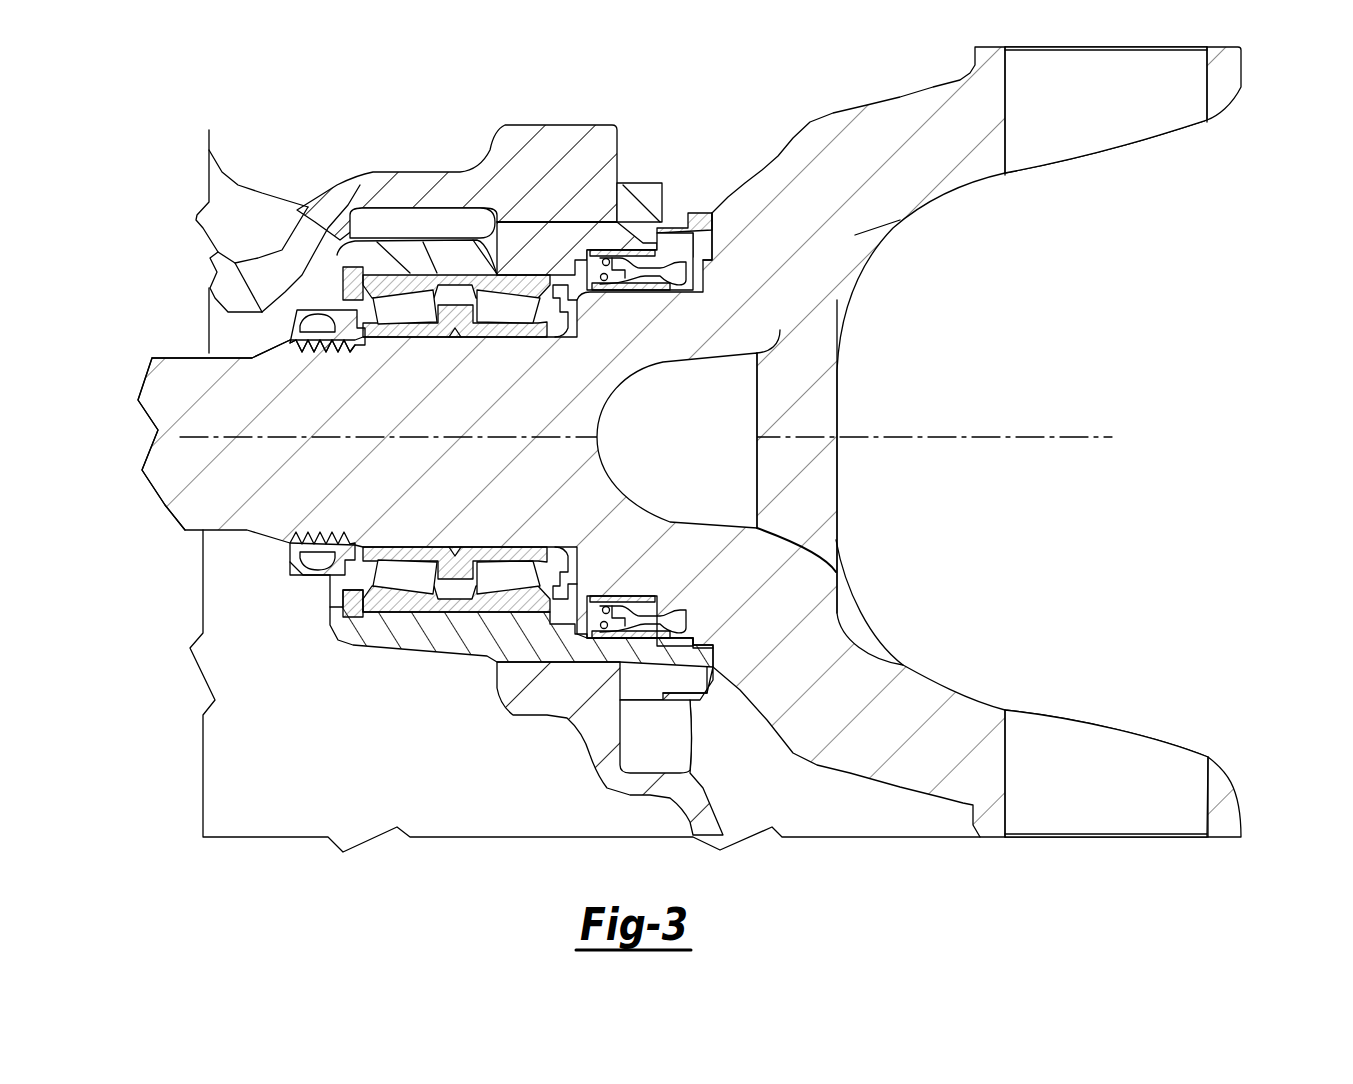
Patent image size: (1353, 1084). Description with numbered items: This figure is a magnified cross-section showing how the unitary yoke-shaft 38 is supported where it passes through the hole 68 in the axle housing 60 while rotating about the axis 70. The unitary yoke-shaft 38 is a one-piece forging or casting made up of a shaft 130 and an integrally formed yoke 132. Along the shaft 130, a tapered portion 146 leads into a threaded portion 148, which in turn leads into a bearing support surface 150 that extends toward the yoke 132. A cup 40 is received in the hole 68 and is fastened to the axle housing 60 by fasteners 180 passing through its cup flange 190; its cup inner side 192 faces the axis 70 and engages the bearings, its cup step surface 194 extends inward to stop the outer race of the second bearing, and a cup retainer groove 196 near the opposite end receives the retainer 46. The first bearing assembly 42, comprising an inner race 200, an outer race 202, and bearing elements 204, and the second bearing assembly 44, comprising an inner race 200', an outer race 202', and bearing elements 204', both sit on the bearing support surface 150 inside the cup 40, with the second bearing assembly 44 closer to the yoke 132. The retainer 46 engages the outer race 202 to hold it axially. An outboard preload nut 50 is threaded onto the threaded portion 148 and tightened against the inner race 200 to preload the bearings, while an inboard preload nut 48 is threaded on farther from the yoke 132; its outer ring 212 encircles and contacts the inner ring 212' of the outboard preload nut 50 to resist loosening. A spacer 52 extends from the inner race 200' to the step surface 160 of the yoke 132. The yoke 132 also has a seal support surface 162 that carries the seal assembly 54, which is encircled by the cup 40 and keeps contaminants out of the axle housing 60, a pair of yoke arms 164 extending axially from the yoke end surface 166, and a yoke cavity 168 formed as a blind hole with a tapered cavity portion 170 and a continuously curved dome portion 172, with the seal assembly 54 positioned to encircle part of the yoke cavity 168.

The unitary yoke-shaft 38 is at (163, 446).
The cup 40 is at (577, 248).
The first bearing assembly 42 is at (436, 546).
The second bearing assembly 44 is at (474, 546).
The retainer 46 is at (335, 603).
The inboard preload nut 48 is at (318, 532).
The outboard preload nut 50 is at (352, 535).
The spacer 52 is at (553, 547).
The seal assembly 54 is at (673, 228).
The axle housing 60 is at (497, 143).
The hole 68 is at (542, 221).
The axis 70 is at (1023, 437).
The shaft 130 is at (427, 452).
The yoke 132 is at (839, 198).
The tapered portion 146 is at (272, 536).
The threaded portion 148 is at (327, 562).
The bearing support surface 150 is at (455, 340).
The step surface 160 is at (583, 320).
The seal support surface 162 is at (622, 598).
The yoke arms 164 is at (1243, 58).
The yoke end surface 166 is at (837, 372).
The yoke cavity 168 is at (782, 479).
The tapered cavity portion 170 is at (757, 380).
The dome portion 172 is at (602, 404).
The fastener 180 is at (691, 740).
The cup flange 190 is at (641, 183).
The cup inner side 192 is at (417, 241).
The cup step surface 194 is at (563, 300).
The cup retainer groove 196 is at (334, 270).
The inner race 200 is at (456, 410).
The inner race 200' is at (514, 418).
The outer race 202 is at (367, 636).
The outer race 202' is at (463, 656).
The bearing elements 204 is at (405, 577).
The bearing elements 204' is at (507, 578).
The outer ring 212 is at (285, 329).
The inner ring 212' is at (283, 343).